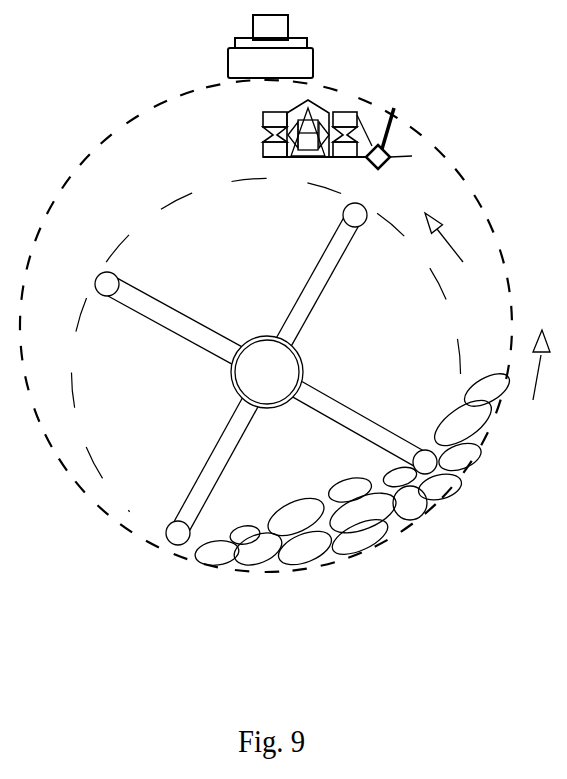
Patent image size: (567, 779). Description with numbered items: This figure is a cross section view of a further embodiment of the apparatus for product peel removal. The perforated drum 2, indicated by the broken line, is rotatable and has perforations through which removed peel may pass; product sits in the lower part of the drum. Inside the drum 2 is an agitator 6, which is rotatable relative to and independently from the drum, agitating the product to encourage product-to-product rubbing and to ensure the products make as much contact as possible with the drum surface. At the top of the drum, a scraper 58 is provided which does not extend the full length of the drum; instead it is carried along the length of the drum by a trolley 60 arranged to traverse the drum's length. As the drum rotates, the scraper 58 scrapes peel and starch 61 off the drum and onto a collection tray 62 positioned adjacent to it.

The perforated drum 2 is at (412, 526).
The agitator 6 is at (324, 392).
The scraper 58 is at (394, 108).
The trolley 60 is at (258, 126).
The peel and starch 61 is at (396, 145).
The collection tray 62 is at (412, 156).